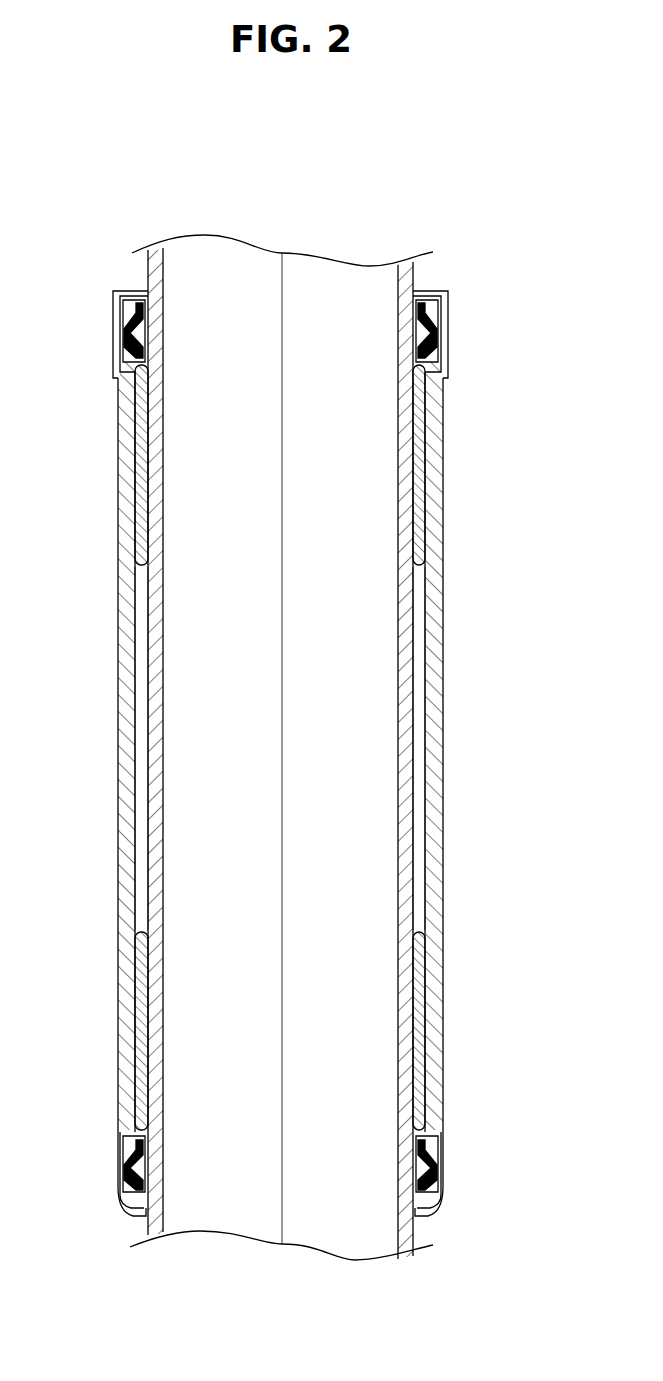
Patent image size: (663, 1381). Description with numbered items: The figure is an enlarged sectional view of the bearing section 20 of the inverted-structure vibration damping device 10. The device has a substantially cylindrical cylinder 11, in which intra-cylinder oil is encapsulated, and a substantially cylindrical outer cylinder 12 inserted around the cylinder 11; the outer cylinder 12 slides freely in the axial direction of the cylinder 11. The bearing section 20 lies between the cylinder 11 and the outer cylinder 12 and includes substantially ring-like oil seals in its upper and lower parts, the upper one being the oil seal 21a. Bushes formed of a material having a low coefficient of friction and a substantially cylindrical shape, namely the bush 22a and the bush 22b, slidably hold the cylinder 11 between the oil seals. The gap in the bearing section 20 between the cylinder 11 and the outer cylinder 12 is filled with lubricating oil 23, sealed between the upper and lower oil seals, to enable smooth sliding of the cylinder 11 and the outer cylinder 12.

The vibration damping device 10 is at (410, 160).
The cylinder 11 is at (414, 277).
The outer cylinder 12 is at (436, 1092).
The bearing section 20 is at (98, 304).
The oil seal 21a is at (440, 337).
The bush 22a is at (420, 440).
The bush 22b is at (420, 1005).
The lubricating oil 23 is at (420, 724).